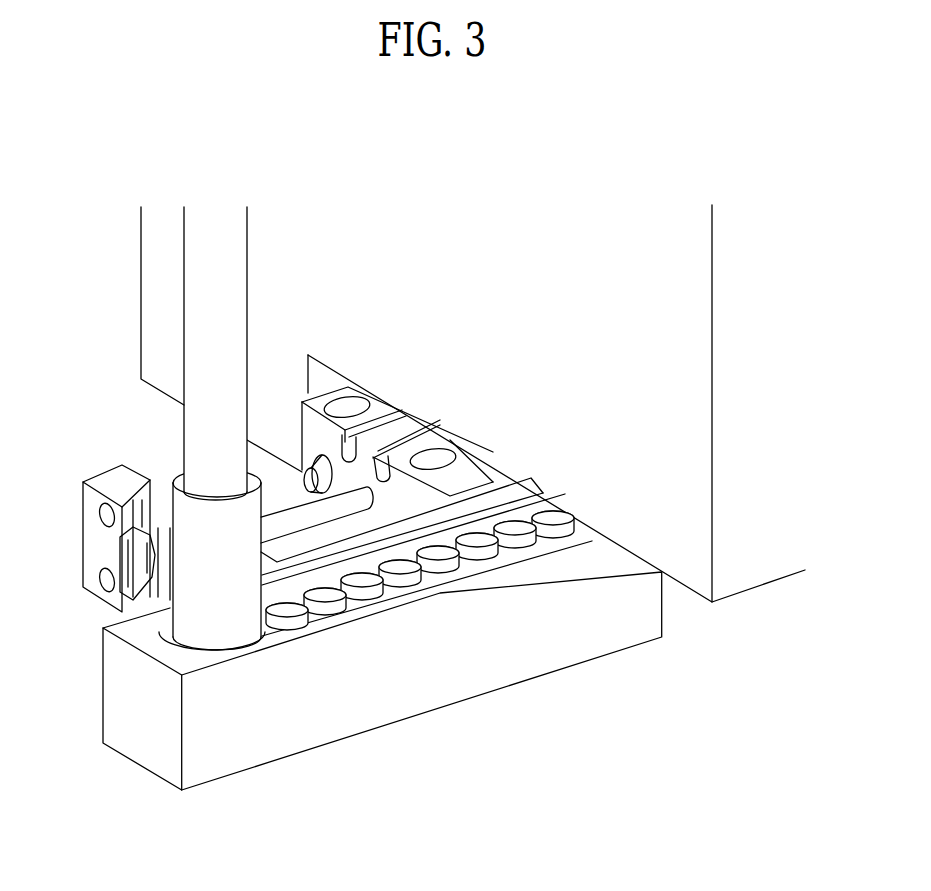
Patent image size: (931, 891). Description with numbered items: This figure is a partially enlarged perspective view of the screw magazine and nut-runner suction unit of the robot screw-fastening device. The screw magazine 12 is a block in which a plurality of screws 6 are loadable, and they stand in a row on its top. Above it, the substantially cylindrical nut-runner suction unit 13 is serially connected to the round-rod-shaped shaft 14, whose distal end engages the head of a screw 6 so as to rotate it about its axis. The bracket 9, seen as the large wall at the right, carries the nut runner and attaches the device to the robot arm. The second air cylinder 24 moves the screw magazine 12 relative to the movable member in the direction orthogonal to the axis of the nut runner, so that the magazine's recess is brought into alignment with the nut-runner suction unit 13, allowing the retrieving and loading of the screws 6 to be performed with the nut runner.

The screws 6 is at (363, 583).
The bracket 9 is at (753, 590).
The screw magazine 12 is at (527, 633).
The nut-runner suction unit 13 is at (190, 620).
The shaft 14 is at (180, 425).
The second air cylinder 24 is at (378, 408).